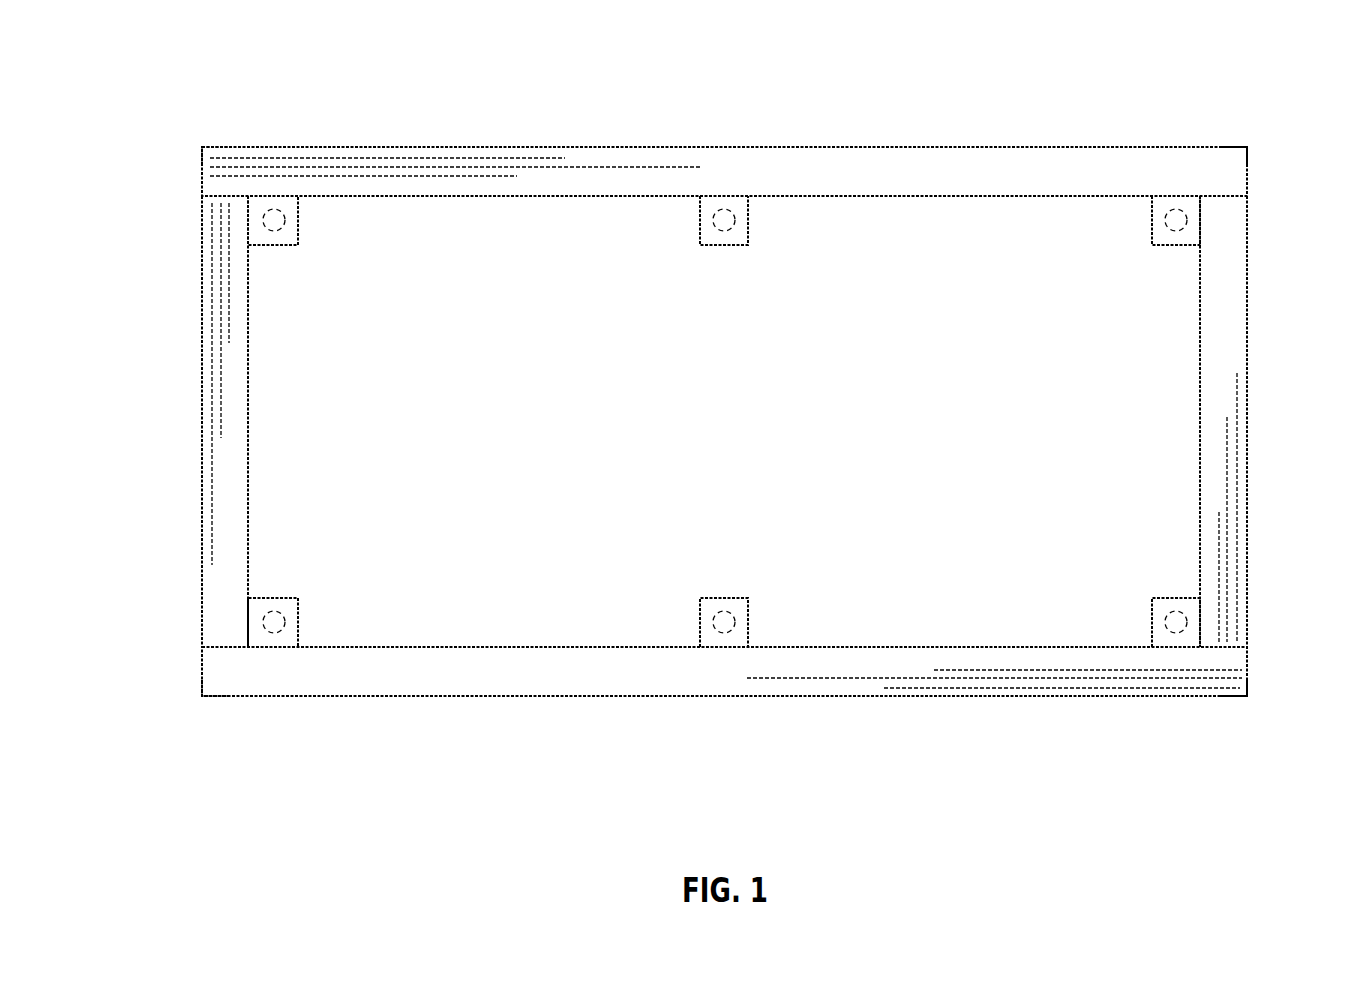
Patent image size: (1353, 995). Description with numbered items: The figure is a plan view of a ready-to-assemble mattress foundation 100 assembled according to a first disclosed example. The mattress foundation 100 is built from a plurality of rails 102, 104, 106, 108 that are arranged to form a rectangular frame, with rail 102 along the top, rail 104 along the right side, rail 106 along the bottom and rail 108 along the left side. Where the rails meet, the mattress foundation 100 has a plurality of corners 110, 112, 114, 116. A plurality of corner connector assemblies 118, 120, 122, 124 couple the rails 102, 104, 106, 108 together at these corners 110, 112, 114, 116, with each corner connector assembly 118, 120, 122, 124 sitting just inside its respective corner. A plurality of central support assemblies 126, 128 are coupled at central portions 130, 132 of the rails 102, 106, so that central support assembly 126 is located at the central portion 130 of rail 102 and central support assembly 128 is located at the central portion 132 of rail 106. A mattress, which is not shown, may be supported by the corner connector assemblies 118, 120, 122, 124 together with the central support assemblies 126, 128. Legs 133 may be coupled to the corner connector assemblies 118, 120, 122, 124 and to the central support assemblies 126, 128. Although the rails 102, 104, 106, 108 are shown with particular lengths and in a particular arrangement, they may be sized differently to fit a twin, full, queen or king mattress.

The ready-to-assemble mattress foundation 100 is at (470, 56).
The rail 102 is at (862, 160).
The rail 104 is at (1230, 371).
The rail 106 is at (652, 684).
The rail 108 is at (226, 474).
The corner 110 is at (1231, 165).
The corner 112 is at (1235, 686).
The corner 114 is at (222, 688).
The corner 116 is at (220, 167).
The corner connector assembly 118 is at (1193, 228).
The corner connector assembly 120 is at (1190, 620).
The corner connector assembly 122 is at (256, 631).
The corner connector assembly 124 is at (258, 231).
The central support assembly 126 is at (728, 236).
The central support assembly 128 is at (742, 612).
The central portion 130 is at (715, 160).
The central portion 132 is at (750, 684).
The leg 133 is at (283, 616).